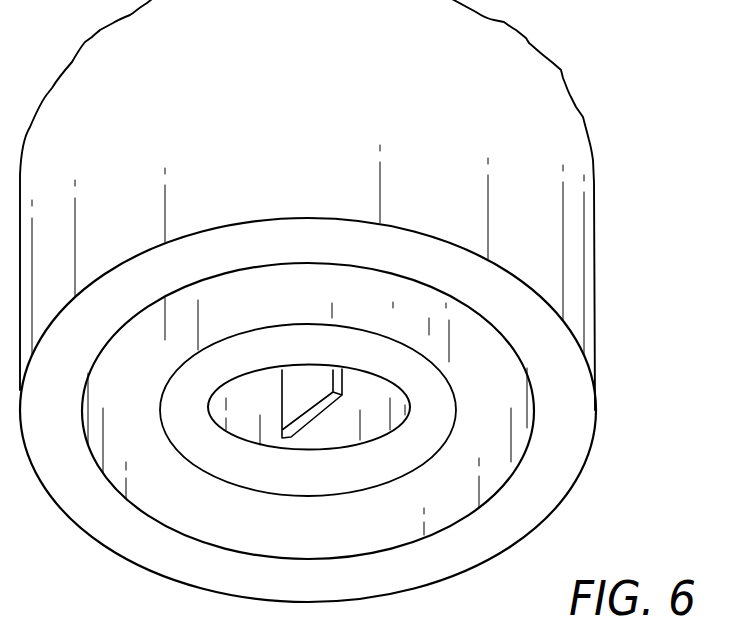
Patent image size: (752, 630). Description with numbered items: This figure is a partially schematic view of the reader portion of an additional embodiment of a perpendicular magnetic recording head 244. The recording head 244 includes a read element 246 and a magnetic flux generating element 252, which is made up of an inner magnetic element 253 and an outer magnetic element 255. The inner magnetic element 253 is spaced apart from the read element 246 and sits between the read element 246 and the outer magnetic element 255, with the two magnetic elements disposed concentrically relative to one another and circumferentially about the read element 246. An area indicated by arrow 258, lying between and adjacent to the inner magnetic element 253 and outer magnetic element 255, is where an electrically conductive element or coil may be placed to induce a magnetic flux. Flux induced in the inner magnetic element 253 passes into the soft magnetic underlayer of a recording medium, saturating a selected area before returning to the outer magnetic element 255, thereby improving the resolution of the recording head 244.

The perpendicular magnetic recording head 244 is at (586, 108).
The magnetic flux generating element 252 is at (600, 293).
The inner magnetic element 253 is at (222, 457).
The outer magnetic element 255 is at (414, 563).
The area for electrically conductive element or coil 258 is at (451, 493).
The read element 246 is at (317, 417).